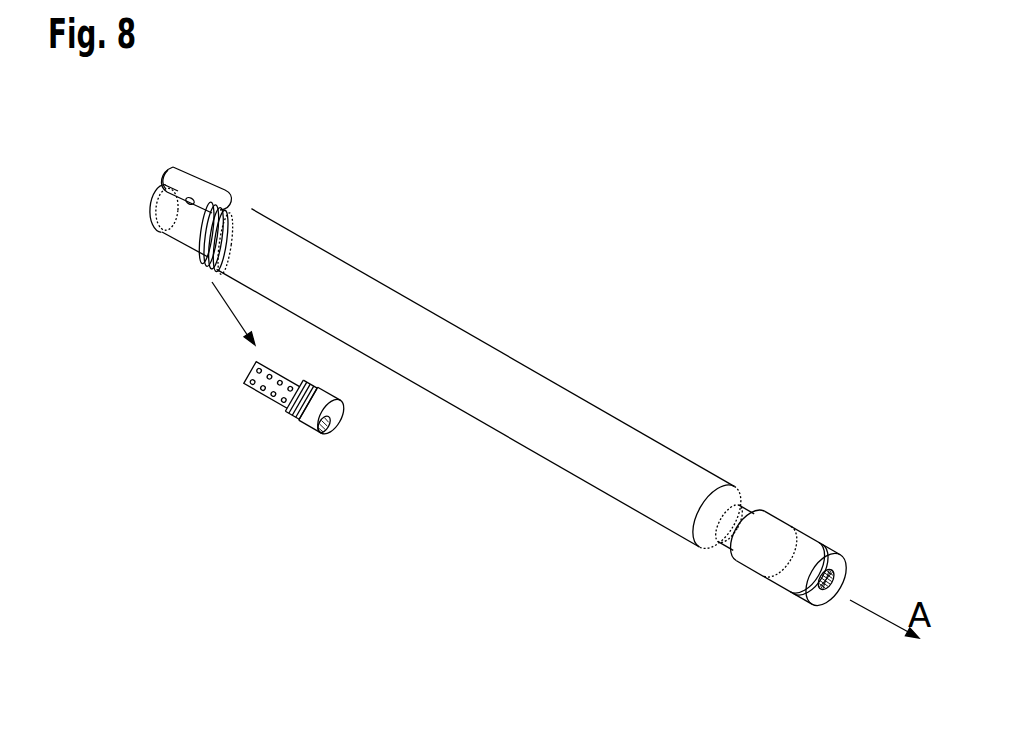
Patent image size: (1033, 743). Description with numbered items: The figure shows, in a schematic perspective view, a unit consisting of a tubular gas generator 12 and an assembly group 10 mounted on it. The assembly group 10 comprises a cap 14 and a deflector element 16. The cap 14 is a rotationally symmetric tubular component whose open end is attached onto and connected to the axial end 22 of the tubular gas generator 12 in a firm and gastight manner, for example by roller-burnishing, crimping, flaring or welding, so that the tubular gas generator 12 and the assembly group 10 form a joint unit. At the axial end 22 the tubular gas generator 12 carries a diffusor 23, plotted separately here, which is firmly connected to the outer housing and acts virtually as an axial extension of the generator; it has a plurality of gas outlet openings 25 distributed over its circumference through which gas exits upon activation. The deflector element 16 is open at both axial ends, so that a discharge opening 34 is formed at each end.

The assembly group 10 is at (148, 141).
The tubular gas generator 12 is at (566, 372).
The cap 14 is at (182, 228).
The deflector element 16 is at (218, 179).
The axial end 22 is at (174, 273).
The diffusor 23 is at (240, 408).
The gas outlet openings 25 is at (267, 405).
The discharge opening 34 is at (170, 174).